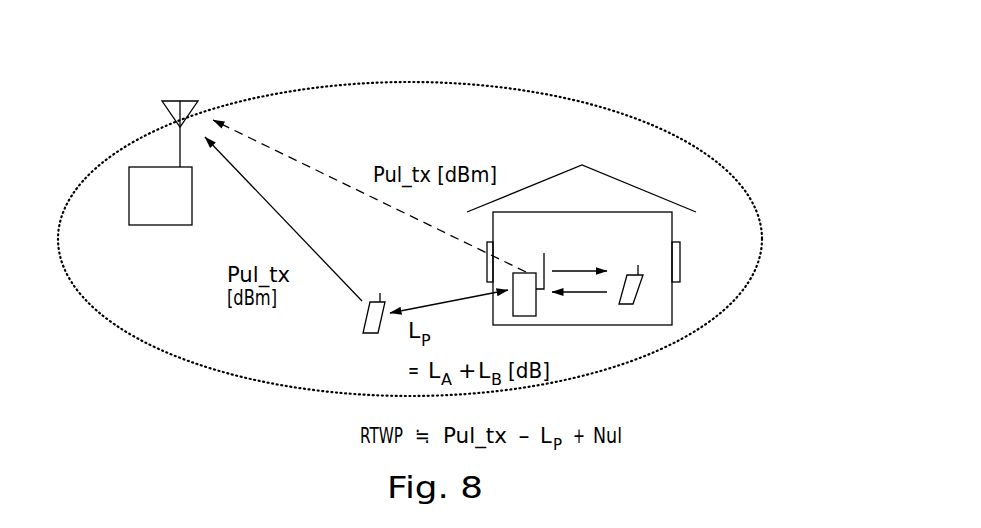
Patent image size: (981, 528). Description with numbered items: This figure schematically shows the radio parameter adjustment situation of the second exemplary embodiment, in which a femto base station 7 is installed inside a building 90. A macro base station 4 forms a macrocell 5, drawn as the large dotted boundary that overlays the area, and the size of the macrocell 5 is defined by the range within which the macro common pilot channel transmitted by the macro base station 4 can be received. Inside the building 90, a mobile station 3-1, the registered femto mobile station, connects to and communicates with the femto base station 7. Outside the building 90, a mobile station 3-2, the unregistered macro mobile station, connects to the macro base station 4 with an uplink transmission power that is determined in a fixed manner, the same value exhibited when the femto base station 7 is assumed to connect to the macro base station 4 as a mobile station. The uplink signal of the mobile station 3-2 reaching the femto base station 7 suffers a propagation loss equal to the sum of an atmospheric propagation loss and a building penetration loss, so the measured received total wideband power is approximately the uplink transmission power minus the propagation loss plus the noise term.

The macro base station 4 is at (148, 167).
The macrocell 5 is at (549, 91).
The building 90 is at (628, 180).
The femto base station 7 is at (522, 273).
The mobile station 3-1 is at (627, 275).
The mobile station 3-2 is at (365, 322).